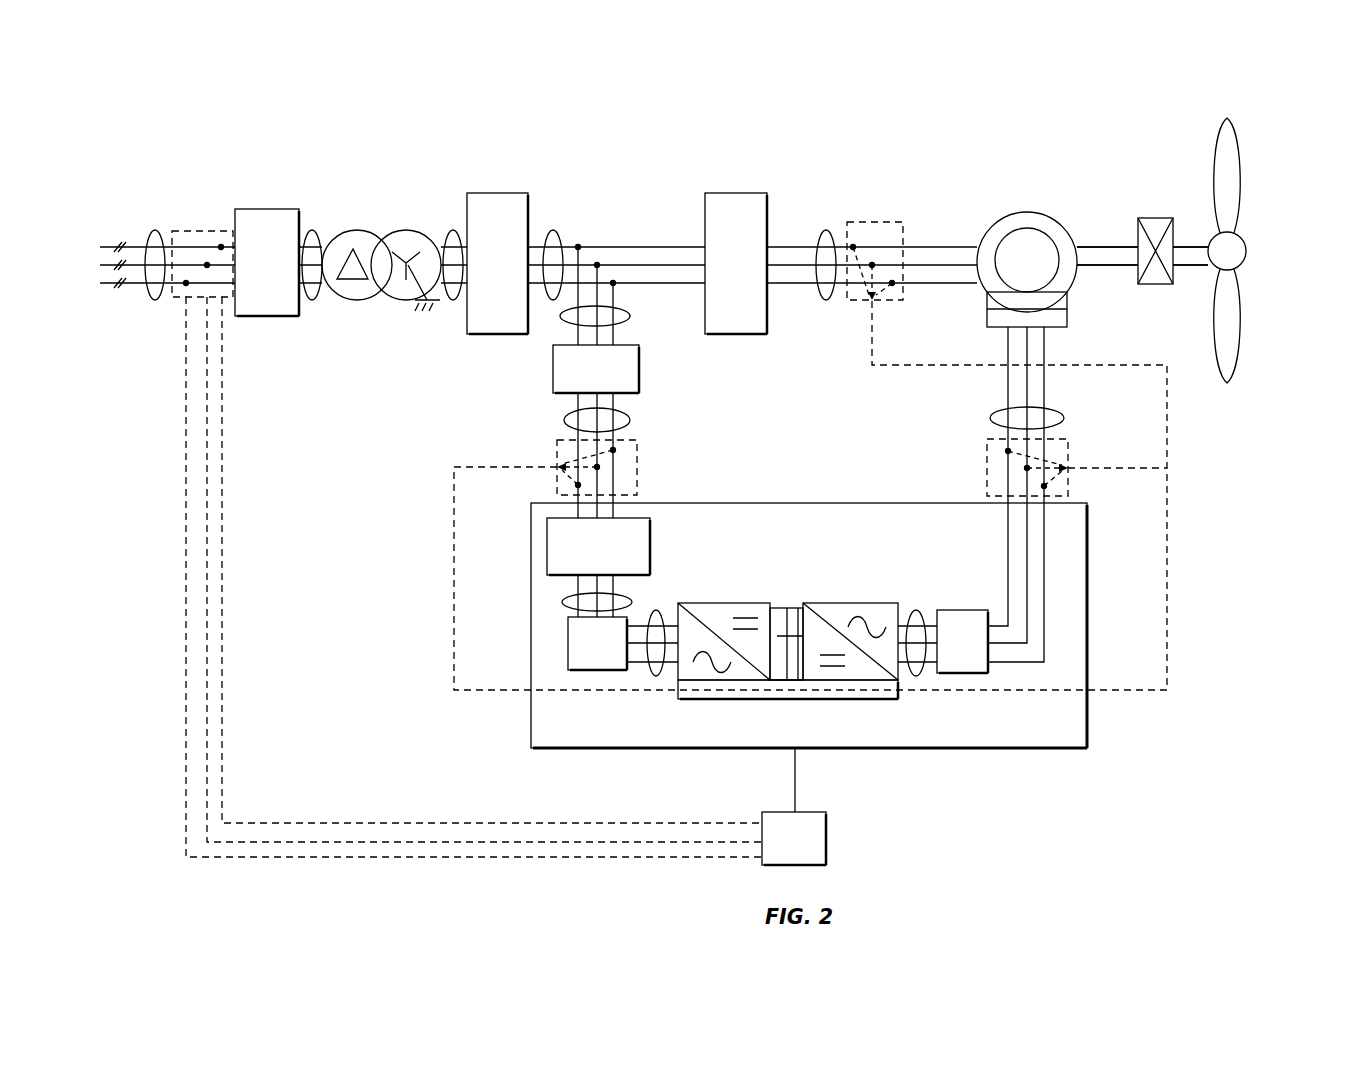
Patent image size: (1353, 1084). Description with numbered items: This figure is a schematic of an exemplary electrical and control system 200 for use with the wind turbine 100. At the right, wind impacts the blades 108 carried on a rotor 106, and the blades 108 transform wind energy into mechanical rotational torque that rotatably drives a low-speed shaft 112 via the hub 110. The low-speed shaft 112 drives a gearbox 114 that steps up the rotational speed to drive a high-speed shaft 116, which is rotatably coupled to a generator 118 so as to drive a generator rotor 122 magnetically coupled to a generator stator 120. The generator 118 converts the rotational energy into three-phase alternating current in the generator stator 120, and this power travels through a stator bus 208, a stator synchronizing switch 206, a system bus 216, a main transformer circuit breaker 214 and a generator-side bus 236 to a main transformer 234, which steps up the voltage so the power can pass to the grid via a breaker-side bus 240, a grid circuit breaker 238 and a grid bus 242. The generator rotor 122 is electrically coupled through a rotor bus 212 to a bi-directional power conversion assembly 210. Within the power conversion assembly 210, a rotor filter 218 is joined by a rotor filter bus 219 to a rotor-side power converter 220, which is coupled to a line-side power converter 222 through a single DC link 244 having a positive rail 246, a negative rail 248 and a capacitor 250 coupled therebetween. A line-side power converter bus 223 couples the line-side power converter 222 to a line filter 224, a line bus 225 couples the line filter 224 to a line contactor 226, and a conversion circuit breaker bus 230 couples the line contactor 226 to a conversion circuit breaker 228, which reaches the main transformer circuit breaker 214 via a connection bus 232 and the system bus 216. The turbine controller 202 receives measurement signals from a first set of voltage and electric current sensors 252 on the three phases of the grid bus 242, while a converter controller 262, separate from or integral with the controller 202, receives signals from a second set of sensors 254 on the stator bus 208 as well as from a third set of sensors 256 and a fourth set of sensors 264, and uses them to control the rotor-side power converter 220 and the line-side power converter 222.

The wind turbine 100 is at (1221, 99).
The rotor 106 is at (1249, 219).
The blades 108 is at (1241, 172).
The hub 110 is at (1247, 245).
The low-speed shaft 112 is at (1193, 247).
The gearbox 114 is at (1152, 218).
The high-speed shaft 116 is at (1107, 247).
The generator 118 is at (1018, 174).
The generator stator 120 is at (1047, 215).
The generator rotor 122 is at (1014, 247).
The electrical and control system 200 is at (190, 124).
The turbine controller 202 is at (811, 850).
The stator synchronizing switch 206 is at (757, 193).
The stator bus 208 is at (826, 231).
The power conversion assembly 210 is at (1088, 578).
The rotor bus 212 is at (1064, 418).
The main transformer circuit breaker 214 is at (470, 193).
The system bus 216 is at (552, 231).
The rotor filter 218 is at (965, 610).
The rotor filter bus 219 is at (918, 609).
The rotor-side power converter 220 is at (896, 671).
The line-side power converter 222 is at (678, 672).
The line-side power converter bus 223 is at (656, 609).
The line filter 224 is at (568, 641).
The line bus 225 is at (565, 602).
The line contactor 226 is at (547, 545).
The conversion circuit breaker 228 is at (640, 382).
The conversion circuit breaker bus 230 is at (630, 420).
The connection bus 232 is at (630, 316).
The main transformer 234 is at (405, 231).
The generator-side bus 236 is at (455, 231).
The grid circuit breaker 238 is at (262, 209).
The breaker-side bus 240 is at (317, 231).
The grid bus 242 is at (157, 231).
The DC link 244 is at (772, 564).
The positive rail 246 is at (797, 608).
The negative rail 248 is at (793, 681).
The capacitor 250 is at (784, 637).
The first set of voltage and electric current sensors 252 is at (171, 314).
The second set of voltage and electric current sensors 254 is at (883, 211).
The third set of voltage and electric current sensors 256 is at (986, 475).
The converter controller 262 is at (850, 691).
The fourth set of voltage and electric current sensors 264 is at (637, 482).